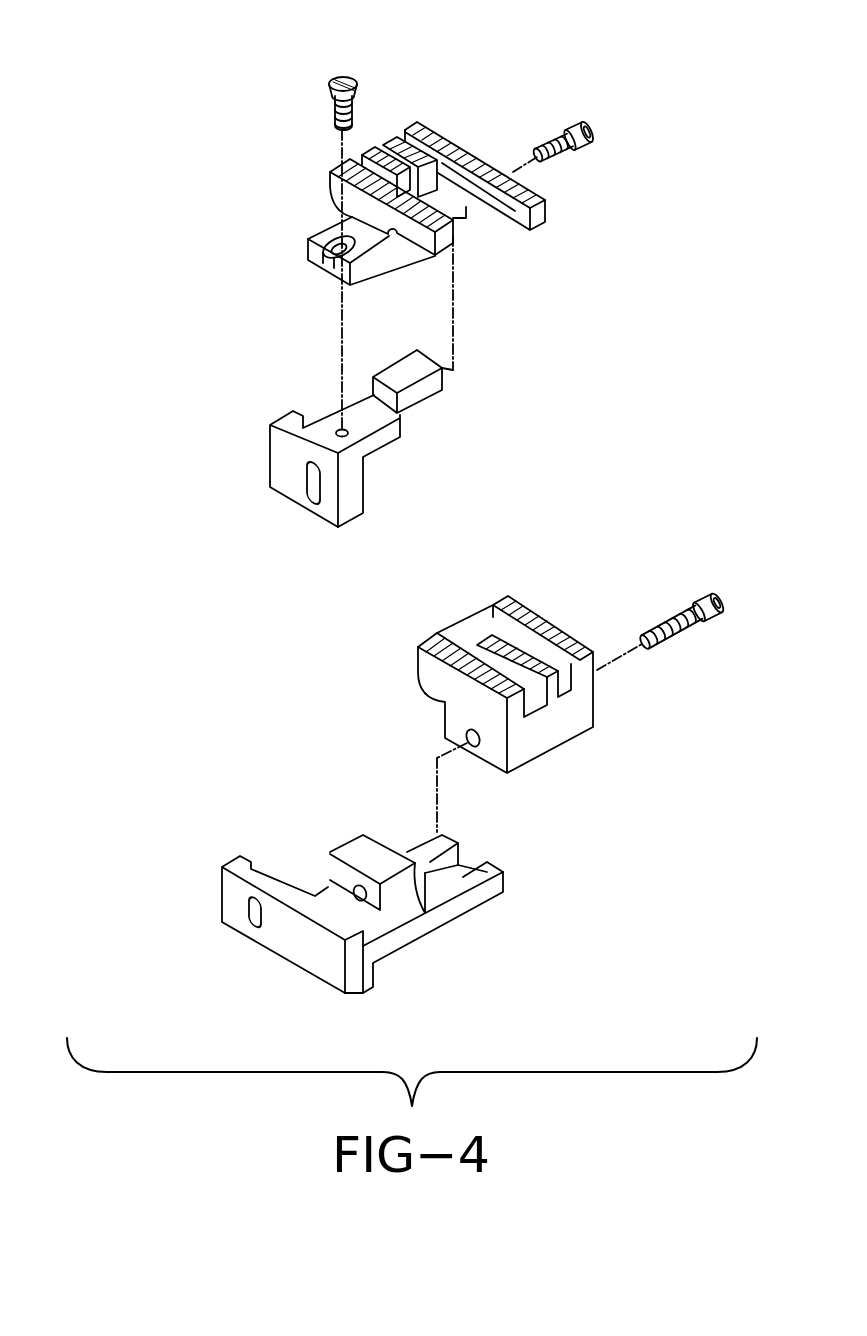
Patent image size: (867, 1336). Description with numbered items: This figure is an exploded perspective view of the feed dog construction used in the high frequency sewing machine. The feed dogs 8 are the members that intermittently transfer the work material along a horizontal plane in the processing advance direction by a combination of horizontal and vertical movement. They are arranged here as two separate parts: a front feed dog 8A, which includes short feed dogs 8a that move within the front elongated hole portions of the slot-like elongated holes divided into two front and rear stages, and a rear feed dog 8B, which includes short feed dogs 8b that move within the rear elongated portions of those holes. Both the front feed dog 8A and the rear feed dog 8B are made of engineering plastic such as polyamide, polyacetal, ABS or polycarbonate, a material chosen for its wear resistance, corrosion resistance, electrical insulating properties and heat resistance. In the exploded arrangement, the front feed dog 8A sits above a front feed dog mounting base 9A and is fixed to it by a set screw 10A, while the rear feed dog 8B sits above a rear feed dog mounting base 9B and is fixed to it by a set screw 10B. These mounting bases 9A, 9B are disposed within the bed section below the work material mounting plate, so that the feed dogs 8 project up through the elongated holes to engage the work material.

The feed dogs 8 is at (80, 397).
The front feed dog 8A is at (557, 617).
The short feed dogs 8a is at (485, 641).
The rear feed dog 8B is at (463, 148).
The short feed dogs 8b is at (370, 152).
The front feed dog mounting base 9A is at (418, 930).
The rear feed dog mounting base 9B is at (383, 435).
The set screw 10A is at (697, 623).
The set screw 10B is at (565, 153).